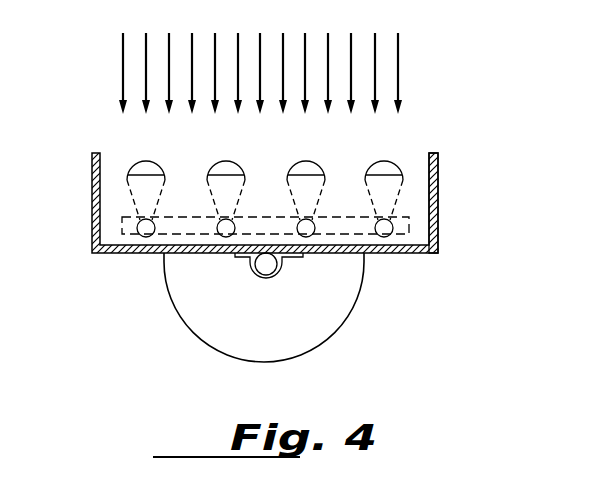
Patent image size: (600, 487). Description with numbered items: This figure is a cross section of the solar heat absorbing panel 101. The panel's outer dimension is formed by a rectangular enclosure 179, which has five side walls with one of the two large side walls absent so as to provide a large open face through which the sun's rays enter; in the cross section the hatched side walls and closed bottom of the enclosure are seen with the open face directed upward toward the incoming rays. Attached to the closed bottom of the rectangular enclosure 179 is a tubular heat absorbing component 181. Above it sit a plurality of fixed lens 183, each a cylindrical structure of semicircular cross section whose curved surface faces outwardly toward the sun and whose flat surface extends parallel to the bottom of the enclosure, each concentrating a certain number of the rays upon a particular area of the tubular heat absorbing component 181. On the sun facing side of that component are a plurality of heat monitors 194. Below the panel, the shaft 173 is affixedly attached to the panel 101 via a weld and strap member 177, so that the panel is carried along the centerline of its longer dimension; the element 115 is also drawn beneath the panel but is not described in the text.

The solar heat absorbing panel 101 is at (450, 222).
The rectangular enclosure 179 is at (438, 190).
The tubular heat absorbing component 181 is at (404, 236).
The fixed lens 183 is at (223, 163).
The heat monitors 194 is at (148, 218).
The cylindrical body 115 is at (173, 285).
The shaft 173 is at (253, 273).
The strap member 177 is at (283, 263).